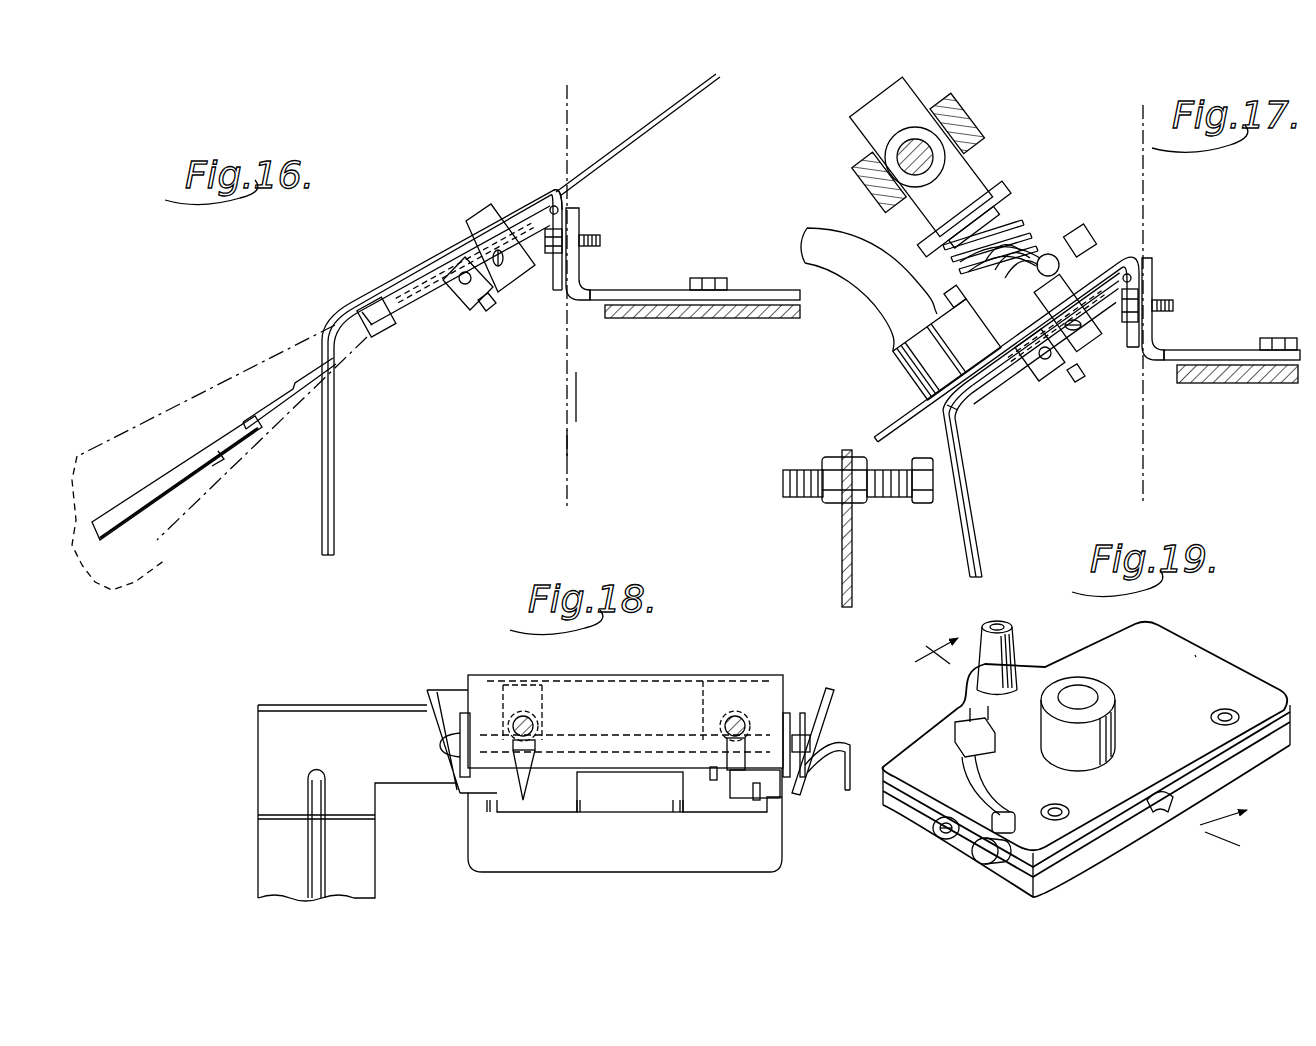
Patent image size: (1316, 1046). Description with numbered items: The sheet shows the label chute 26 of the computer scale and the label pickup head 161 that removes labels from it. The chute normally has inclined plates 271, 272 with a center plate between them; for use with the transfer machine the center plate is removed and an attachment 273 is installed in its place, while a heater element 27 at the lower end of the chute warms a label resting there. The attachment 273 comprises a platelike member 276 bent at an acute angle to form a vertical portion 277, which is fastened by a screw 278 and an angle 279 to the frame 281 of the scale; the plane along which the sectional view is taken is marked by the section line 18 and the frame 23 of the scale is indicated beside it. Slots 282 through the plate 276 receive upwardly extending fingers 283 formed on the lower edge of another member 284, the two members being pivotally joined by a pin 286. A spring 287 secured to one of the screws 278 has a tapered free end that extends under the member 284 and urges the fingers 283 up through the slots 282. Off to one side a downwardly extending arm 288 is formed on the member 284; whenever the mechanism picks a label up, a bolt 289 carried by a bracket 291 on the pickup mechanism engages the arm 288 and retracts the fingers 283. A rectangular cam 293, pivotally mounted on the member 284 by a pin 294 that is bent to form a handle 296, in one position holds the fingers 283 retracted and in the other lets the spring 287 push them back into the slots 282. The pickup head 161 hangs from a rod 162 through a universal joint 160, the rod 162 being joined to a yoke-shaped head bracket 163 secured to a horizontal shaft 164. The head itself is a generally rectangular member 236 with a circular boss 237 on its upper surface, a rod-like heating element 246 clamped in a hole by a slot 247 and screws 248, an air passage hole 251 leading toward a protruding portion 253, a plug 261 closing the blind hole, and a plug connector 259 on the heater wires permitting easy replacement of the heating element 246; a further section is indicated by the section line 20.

In FIG. 16, the section line 18— 18 is at (569, 93).
In FIG. 19, the section line 20— 20 is at (1092, 741).
In FIG. 16, the frame 23 is at (566, 441).
In FIG. 17, the frame 23 is at (1141, 441).
In FIG. 16, the label chute 26 is at (214, 382).
In FIG. 16, the heater element 27 is at (158, 492).
In FIG. 17, the universal joint 160 is at (1012, 200).
In FIG. 17, the label pickup head 161 is at (1068, 208).
In FIG. 19, the label pickup head 161 is at (1118, 858).
In FIG. 17, the rod 162 is at (982, 165).
In FIG. 17, the head bracket 163 is at (866, 114).
In FIG. 17, the horizontal shaft 164 is at (905, 156).
In FIG. 19, the rectangular member 236 is at (1197, 660).
In FIG. 19, the circular boss 237 is at (1110, 718).
In FIG. 19, the heating element 246 is at (978, 855).
In FIG. 19, the slot 247 is at (1265, 738).
In FIG. 19, the screws 248 is at (1213, 722).
In FIG. 19, the hole 251 is at (1165, 808).
In FIG. 19, the protruding portion 253 is at (968, 678).
In FIG. 19, the plug connector 259 is at (957, 769).
In FIG. 19, the plug 261 is at (934, 830).
In FIG. 16, the inclined plate 271 is at (651, 126).
In FIG. 16, the inclined plate 272 is at (245, 413).
In FIG. 16, the attachment 273 is at (418, 240).
In FIG. 17, the attachment 273 is at (972, 474).
In FIG. 18, the attachment 273 is at (256, 752).
In FIG. 16, the platelike member 276 is at (550, 190).
In FIG. 17, the platelike member 276 is at (880, 437).
In FIG. 18, the platelike member 276 is at (476, 858).
In FIG. 16, the vertical portion 277 is at (566, 275).
In FIG. 17, the vertical portion 277 is at (1146, 258).
In FIG. 18, the vertical portion 277 is at (786, 700).
In FIG. 16, the screw 278 is at (600, 240).
In FIG. 17, the screw 278 is at (1147, 305).
In FIG. 18, the screw 278 is at (525, 716).
In FIG. 16, the angle 279 is at (652, 289).
In FIG. 17, the angle 279 is at (1232, 349).
In FIG. 16, the frame 281 is at (718, 318).
In FIG. 17, the frame 281 is at (1275, 383).
In FIG. 16, the slots 282 is at (367, 318).
In FIG. 18, the slots 282 is at (657, 827).
In FIG. 16, the fingers 283 is at (350, 302).
In FIG. 17, the fingers 283 is at (960, 425).
In FIG. 16, the member 284 is at (428, 292).
In FIG. 17, the member 284 is at (1010, 363).
In FIG. 18, the member 284 is at (560, 790).
In FIG. 16, the pin 286 is at (498, 250).
In FIG. 17, the pin 286 is at (1087, 328).
In FIG. 18, the pin 286 is at (703, 680).
In FIG. 16, the spring 287 is at (560, 206).
In FIG. 17, the spring 287 is at (1132, 278).
In FIG. 18, the spring 287 is at (528, 802).
In FIG. 16, the arm 288 is at (336, 503).
In FIG. 17, the arm 288 is at (976, 558).
In FIG. 18, the arm 288 is at (268, 849).
In FIG. 17, the bolt 289 is at (903, 500).
In FIG. 17, the bracket 291 is at (840, 520).
In FIG. 16, the cam 293 is at (470, 312).
In FIG. 17, the cam 293 is at (1058, 372).
In FIG. 18, the cam 293 is at (738, 797).
In FIG. 16, the pin 294 is at (463, 285).
In FIG. 17, the pin 294 is at (1045, 360).
In FIG. 18, the pin 294 is at (800, 796).
In FIG. 16, the handle 296 is at (496, 305).
In FIG. 17, the handle 296 is at (1076, 373).
In FIG. 18, the handle 296 is at (880, 735).